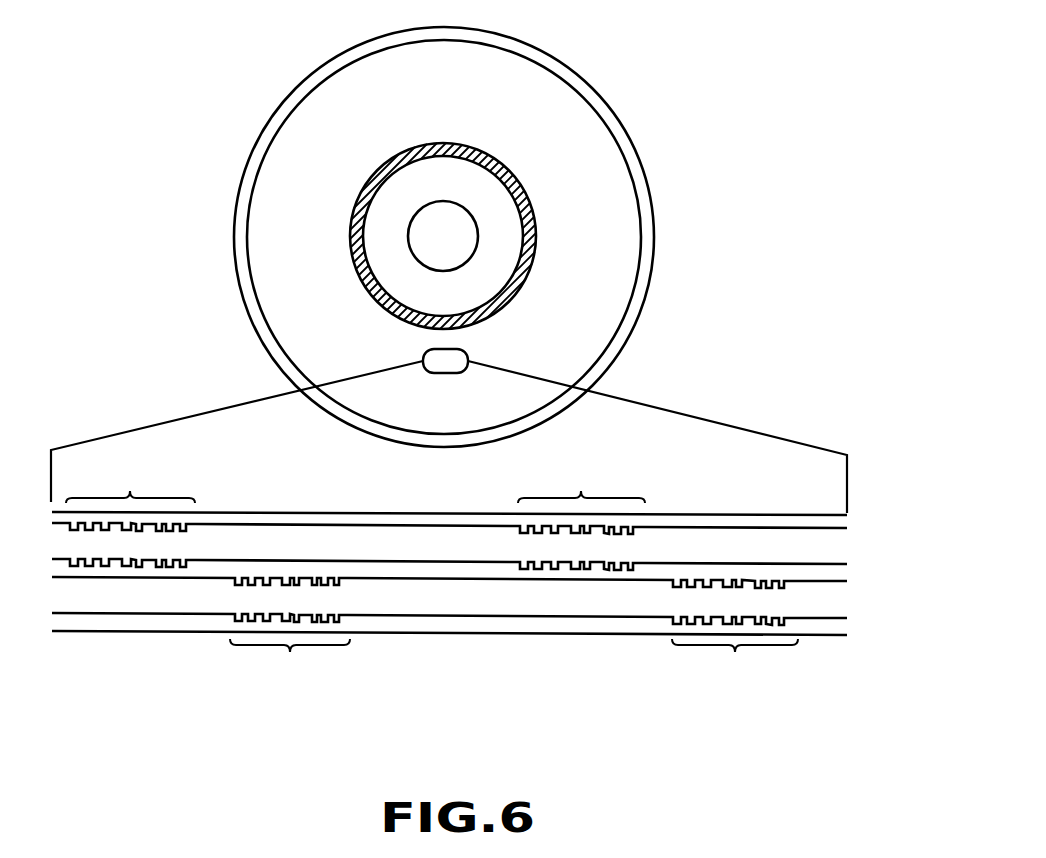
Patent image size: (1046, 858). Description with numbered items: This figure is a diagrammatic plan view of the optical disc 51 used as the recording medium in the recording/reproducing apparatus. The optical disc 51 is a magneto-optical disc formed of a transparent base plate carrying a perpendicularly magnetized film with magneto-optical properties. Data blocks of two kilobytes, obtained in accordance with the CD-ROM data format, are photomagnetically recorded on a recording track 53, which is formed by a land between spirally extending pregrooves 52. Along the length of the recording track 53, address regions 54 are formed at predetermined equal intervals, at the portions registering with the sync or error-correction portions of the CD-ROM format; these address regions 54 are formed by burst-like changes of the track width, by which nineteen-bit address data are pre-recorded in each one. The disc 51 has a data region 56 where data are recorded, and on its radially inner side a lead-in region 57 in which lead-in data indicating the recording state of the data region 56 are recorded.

The optical disc 51 is at (643, 147).
The pregrooves 52 is at (833, 520).
The recording track 53 is at (388, 597).
The address regions 54 is at (432, 573).
The data region 56 is at (550, 140).
The lead-in region 57 is at (537, 240).